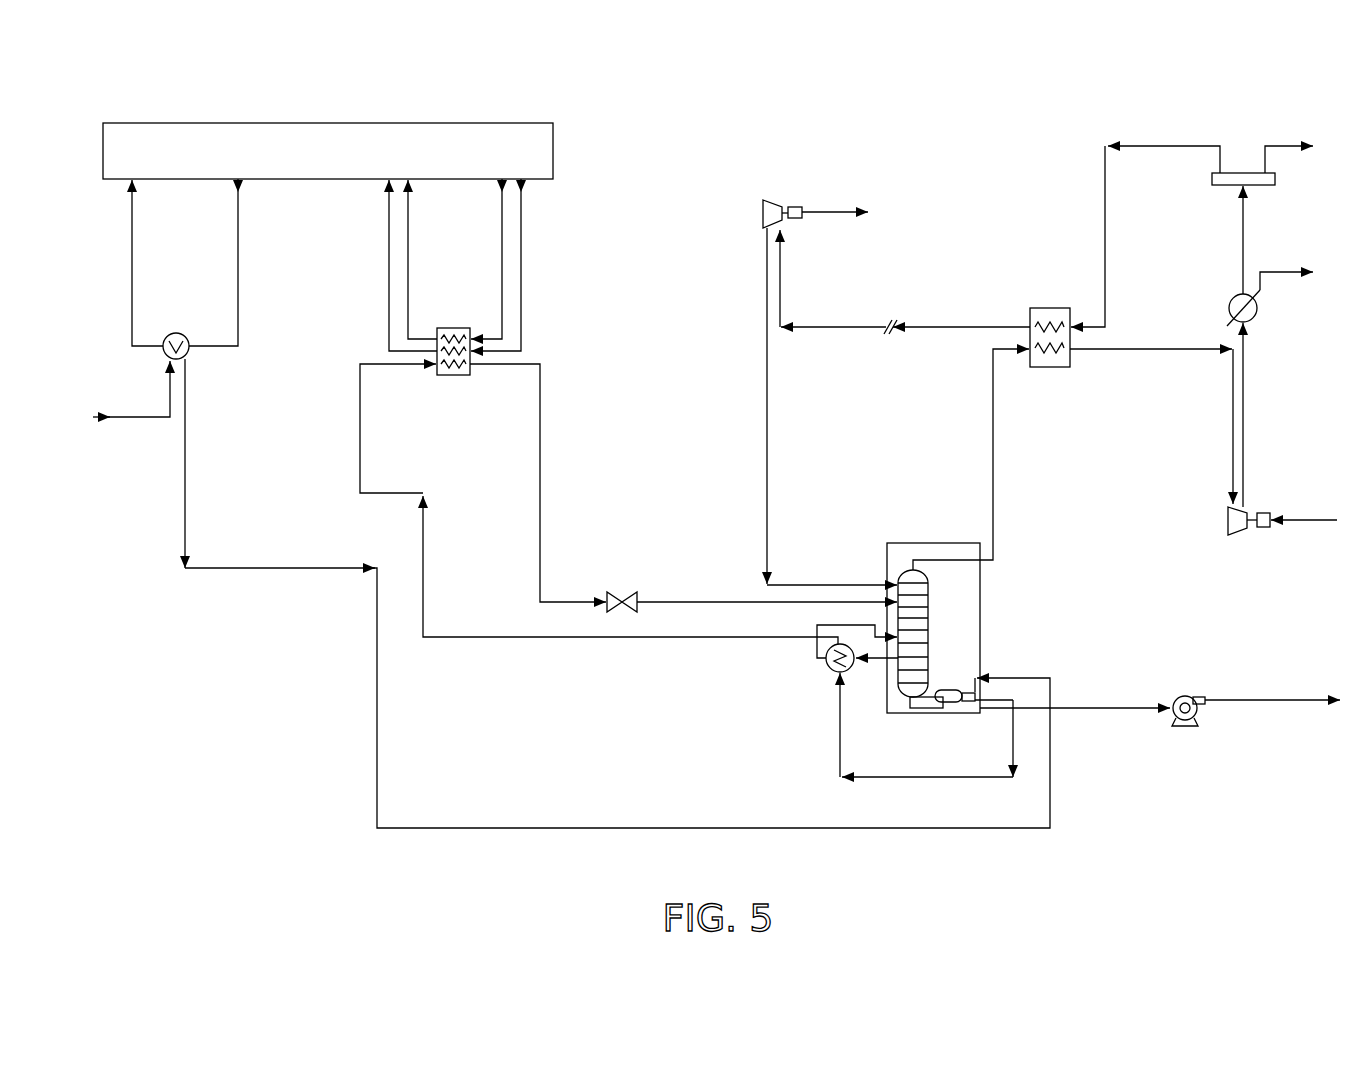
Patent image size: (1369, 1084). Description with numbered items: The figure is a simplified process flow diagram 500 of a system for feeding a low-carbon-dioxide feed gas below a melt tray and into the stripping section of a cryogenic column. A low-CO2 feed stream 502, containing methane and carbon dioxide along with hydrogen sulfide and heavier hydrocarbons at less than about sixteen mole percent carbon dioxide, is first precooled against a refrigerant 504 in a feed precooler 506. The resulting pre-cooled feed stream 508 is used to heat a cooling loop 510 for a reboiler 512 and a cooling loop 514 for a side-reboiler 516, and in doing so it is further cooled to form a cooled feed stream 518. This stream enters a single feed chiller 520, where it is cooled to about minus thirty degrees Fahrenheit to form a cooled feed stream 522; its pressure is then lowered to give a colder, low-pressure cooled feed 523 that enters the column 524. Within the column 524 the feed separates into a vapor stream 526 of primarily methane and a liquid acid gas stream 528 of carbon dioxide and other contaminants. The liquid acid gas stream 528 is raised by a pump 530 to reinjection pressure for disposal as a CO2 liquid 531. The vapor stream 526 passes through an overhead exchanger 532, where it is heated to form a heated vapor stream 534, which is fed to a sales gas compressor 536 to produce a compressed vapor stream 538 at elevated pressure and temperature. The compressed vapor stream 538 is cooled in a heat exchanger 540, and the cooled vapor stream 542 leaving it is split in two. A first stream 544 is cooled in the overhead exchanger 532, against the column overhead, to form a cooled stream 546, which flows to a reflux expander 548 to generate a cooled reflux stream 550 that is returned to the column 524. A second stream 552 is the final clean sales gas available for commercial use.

The process flow diagram 500 is at (737, 887).
The low-CO2 feed stream 502 is at (138, 418).
The refrigerant 504 is at (310, 165).
The feed precooler 506 is at (188, 354).
The pre-cooled feed stream 508 is at (453, 830).
The cooling loop 510 is at (928, 712).
The reboiler 512 is at (947, 688).
The cooling loop 514 is at (827, 622).
The side-reboiler 516 is at (823, 673).
The cooled feed stream 518 is at (492, 638).
The feed chiller 520 is at (452, 383).
The cooled feed stream 522 is at (543, 425).
The low-pressure cooled feed 523 is at (657, 600).
The column 524 is at (930, 620).
The vapor stream 526 is at (996, 462).
The liquid acid gas stream 528 is at (1090, 707).
The pump 530 is at (1188, 727).
The CO2 liquid 531 is at (1250, 698).
The overhead exchanger 532 is at (1052, 307).
The heated vapor stream 534 is at (1157, 353).
The sales gas compressor 536 is at (1242, 535).
The compressed vapor stream 538 is at (1245, 437).
The heat exchanger 540 is at (1258, 320).
The cooled vapor stream 542 is at (1247, 240).
The first stream 544 is at (1178, 143).
The cooled stream 546 is at (948, 330).
The reflux expander 548 is at (765, 198).
The cooled reflux stream 550 is at (766, 392).
The second stream 552 is at (1280, 143).